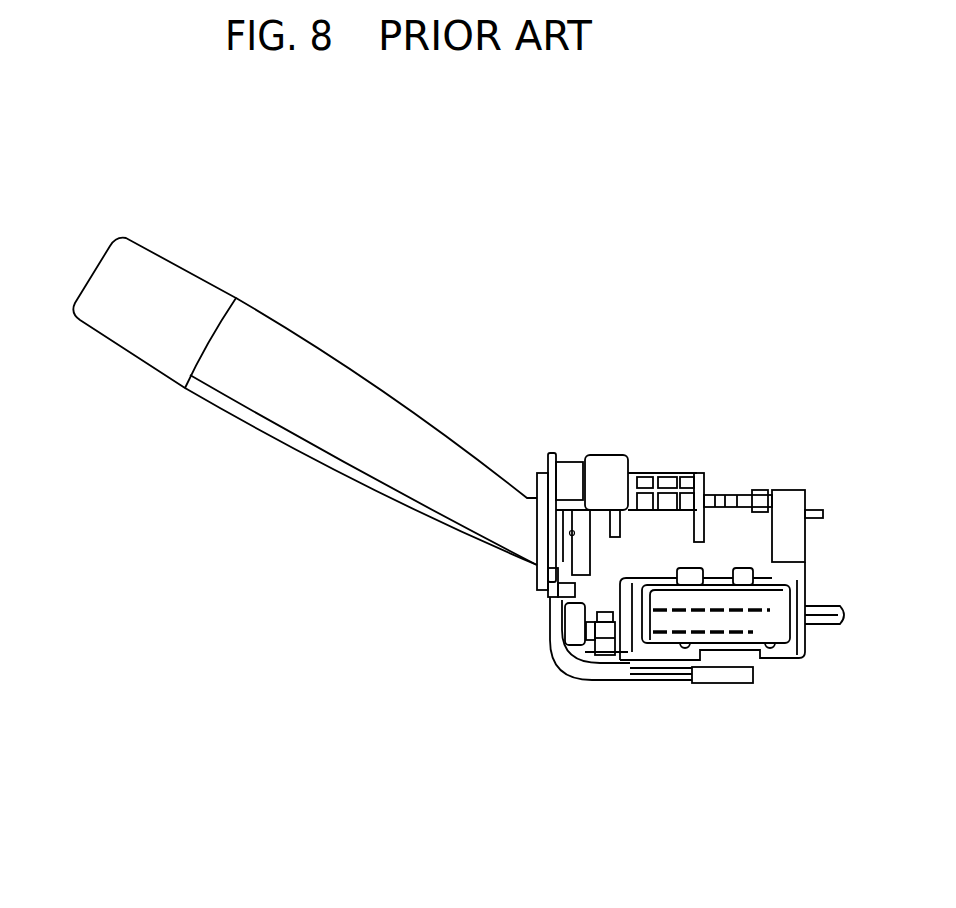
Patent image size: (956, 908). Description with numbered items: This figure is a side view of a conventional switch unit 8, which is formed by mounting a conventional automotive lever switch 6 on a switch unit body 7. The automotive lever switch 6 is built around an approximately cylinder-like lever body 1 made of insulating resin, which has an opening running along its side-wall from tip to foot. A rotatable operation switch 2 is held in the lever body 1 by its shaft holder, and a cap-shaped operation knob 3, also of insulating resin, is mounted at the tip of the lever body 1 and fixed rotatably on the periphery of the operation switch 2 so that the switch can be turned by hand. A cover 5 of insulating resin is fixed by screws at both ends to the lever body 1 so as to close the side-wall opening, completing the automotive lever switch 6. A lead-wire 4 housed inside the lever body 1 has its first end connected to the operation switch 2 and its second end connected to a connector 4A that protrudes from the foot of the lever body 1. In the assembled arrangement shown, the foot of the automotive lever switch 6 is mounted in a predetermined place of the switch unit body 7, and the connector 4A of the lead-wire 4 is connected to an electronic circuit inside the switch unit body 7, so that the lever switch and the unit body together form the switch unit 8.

The lever body 1 is at (361, 431).
The operation switch 2 is at (177, 342).
The operation knob 3 is at (140, 340).
The lead-wire 4 is at (645, 677).
The connector 4A is at (710, 678).
The cover 5 is at (290, 438).
The automotive lever switch 6 is at (73, 413).
The switch unit body 7 is at (605, 568).
The switch unit 8 is at (107, 480).